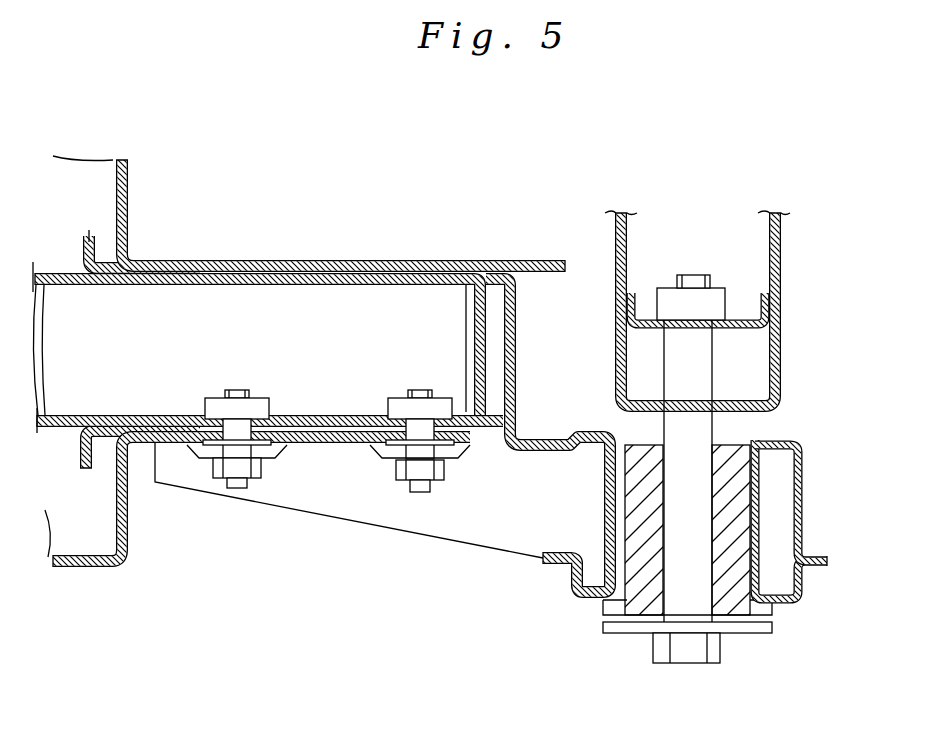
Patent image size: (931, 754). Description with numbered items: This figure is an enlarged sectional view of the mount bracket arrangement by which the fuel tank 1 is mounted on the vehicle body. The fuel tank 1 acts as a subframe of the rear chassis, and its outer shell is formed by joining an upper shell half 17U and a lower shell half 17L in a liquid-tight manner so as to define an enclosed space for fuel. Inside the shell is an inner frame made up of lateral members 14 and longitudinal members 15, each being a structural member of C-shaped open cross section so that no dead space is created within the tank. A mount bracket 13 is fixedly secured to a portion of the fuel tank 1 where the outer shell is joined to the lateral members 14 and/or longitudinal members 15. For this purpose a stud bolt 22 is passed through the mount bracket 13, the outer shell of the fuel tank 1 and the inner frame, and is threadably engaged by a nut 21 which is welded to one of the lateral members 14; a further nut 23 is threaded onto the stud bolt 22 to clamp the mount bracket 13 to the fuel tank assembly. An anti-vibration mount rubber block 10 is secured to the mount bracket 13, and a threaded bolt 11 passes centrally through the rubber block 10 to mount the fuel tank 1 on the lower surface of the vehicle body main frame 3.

The fuel tank 1 is at (95, 180).
The vehicle body main frame 3 is at (778, 383).
The anti-vibration mount rubber block 10 is at (740, 607).
The threaded bolt 11 is at (687, 652).
The mount bracket 13 is at (502, 545).
The lateral member 14 is at (58, 270).
The longitudinal member 15 is at (487, 310).
The upper shell half 17U is at (130, 193).
The lower shell half 17L is at (100, 568).
The nut 21 is at (386, 412).
The stud bolt 22 is at (243, 488).
The nut 23 is at (392, 467).